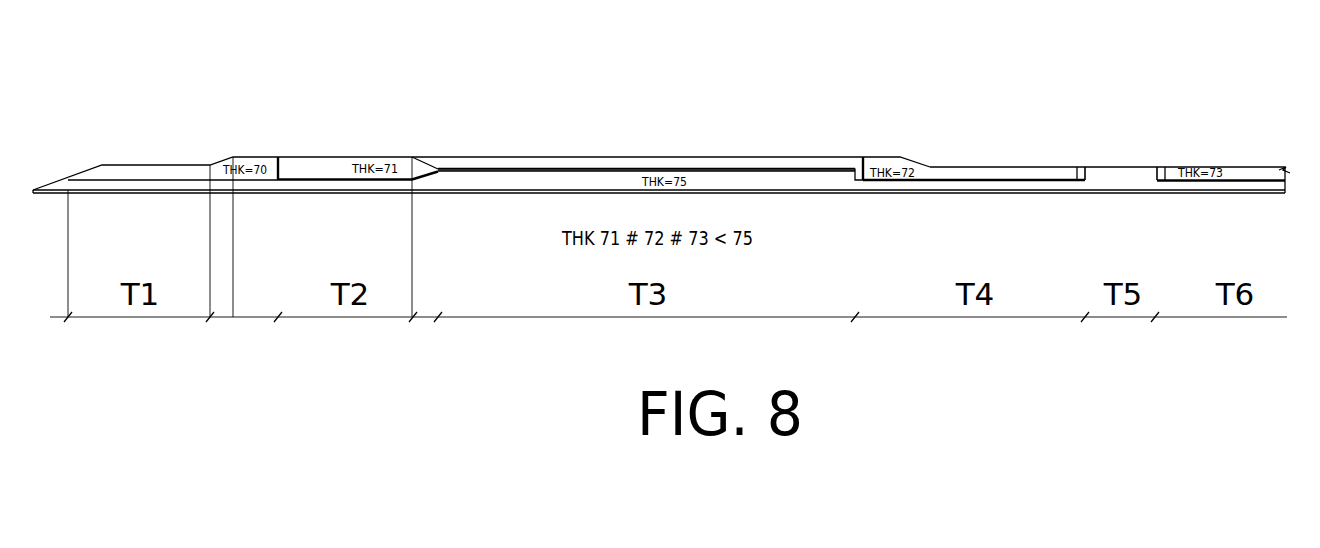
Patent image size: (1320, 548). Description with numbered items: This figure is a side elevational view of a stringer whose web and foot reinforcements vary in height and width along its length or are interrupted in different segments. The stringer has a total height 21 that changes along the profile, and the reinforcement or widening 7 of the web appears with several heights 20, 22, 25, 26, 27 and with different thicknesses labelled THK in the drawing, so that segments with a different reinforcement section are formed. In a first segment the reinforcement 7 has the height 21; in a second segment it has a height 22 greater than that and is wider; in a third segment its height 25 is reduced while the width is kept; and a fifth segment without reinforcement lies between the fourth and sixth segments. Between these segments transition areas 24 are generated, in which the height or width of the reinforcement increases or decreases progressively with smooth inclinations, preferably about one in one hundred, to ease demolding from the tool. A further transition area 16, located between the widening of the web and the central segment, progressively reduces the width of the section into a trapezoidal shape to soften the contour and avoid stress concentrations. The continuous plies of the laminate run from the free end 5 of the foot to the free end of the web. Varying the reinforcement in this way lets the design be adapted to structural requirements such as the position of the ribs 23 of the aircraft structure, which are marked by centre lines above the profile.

The free end of the foot 5 is at (57, 195).
The widening of the web 7 is at (373, 157).
The transition area 16 is at (708, 168).
The height of the reinforcement of the head 20 is at (147, 190).
The total height 21 is at (185, 143).
The height of the reinforcement 22 is at (323, 180).
The ribs 23 is at (1233, 212).
The transition areas 24 is at (270, 113).
The height of the reinforcement 25 is at (512, 185).
The height of the reinforcement of the head 26 is at (958, 190).
The height of the reinforcement of the head 27 is at (1270, 190).